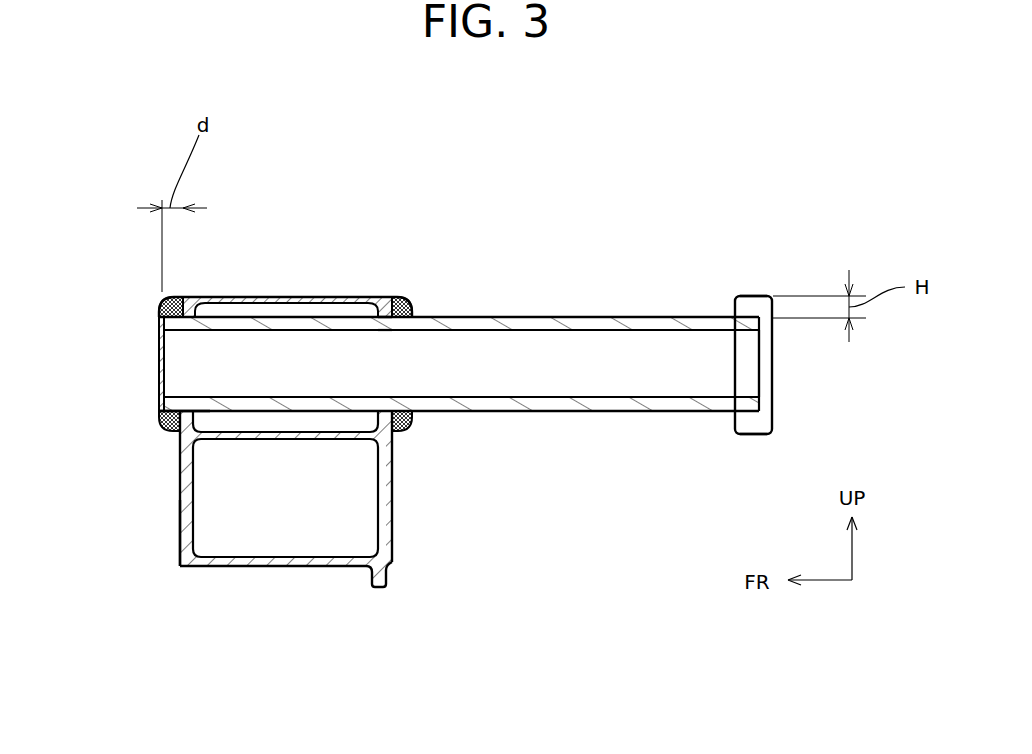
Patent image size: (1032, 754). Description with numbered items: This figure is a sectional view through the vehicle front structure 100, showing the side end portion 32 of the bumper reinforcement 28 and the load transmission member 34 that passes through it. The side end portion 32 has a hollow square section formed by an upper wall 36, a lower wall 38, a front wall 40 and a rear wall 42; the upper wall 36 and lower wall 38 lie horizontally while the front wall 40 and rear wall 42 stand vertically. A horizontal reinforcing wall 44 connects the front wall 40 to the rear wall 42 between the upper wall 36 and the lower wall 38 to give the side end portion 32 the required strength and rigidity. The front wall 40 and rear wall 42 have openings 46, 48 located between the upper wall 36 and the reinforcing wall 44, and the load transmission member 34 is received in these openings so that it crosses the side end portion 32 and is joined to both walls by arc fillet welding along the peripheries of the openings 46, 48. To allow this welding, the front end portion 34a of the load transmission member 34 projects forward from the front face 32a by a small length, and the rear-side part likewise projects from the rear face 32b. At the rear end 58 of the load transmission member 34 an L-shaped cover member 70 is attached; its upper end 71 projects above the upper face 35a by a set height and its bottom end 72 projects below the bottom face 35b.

The vehicle front structure 100 is at (532, 170).
The bumper reinforcement 28 is at (179, 462).
The side end portion 32 is at (313, 577).
The front face 32a is at (179, 490).
The rear face 32b is at (393, 538).
The load transmission member 34 is at (545, 317).
The front end portion 34a is at (177, 397).
The upper face 35a is at (625, 317).
The bottom face 35b is at (583, 413).
The upper wall 36 is at (318, 297).
The lower wall 38 is at (262, 568).
The front wall 40 is at (179, 530).
The rear wall 42 is at (392, 518).
The reinforcing wall 44 is at (317, 440).
The opening 46 is at (185, 342).
The opening 48 is at (386, 330).
The rear end 58 is at (760, 385).
The cover member 70 is at (772, 368).
The upper end 71 is at (748, 297).
The bottom end 72 is at (745, 437).